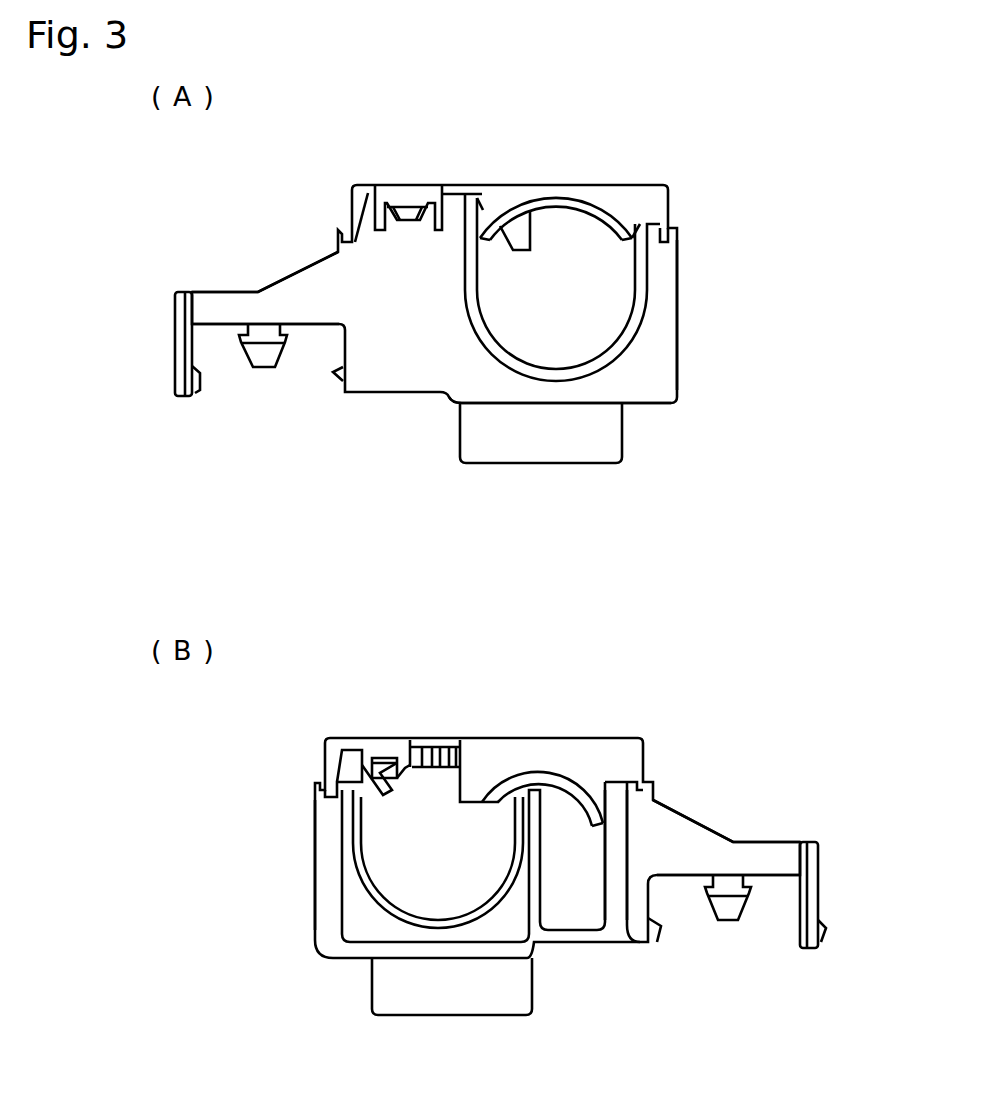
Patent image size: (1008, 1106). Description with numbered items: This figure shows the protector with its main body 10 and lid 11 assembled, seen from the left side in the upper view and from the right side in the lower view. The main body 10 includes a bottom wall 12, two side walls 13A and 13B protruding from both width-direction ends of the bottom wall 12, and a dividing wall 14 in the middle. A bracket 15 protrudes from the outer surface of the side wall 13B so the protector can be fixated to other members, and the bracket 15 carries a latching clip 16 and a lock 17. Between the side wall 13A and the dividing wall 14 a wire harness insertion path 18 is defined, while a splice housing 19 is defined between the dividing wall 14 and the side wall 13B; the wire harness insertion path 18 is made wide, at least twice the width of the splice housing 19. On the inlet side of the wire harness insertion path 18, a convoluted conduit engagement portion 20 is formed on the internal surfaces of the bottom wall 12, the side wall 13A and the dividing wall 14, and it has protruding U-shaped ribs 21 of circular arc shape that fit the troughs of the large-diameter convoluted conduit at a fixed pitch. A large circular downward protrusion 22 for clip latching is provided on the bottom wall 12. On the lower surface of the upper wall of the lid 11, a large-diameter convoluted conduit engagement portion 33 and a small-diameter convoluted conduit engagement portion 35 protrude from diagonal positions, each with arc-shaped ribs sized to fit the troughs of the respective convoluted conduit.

The main body 10 is at (678, 372).
The lid 11 is at (670, 200).
The bottom wall 12 is at (460, 403).
The side wall 13A is at (678, 292).
The side wall 13B is at (628, 818).
The dividing wall 14 is at (537, 880).
The bracket 15 is at (210, 290).
The latching clip 16 is at (284, 350).
The lock 17 is at (181, 390).
The wire harness insertion path 18 is at (358, 922).
The splice housing 19 is at (598, 877).
The convoluted conduit engagement portion 20 is at (578, 358).
The U-shaped ribs 21 is at (640, 340).
The downward protrusion 22 is at (625, 432).
The large-diameter convoluted conduit engagement portion 33 is at (558, 200).
The small-diameter convoluted conduit engagement portion 35 is at (585, 785).